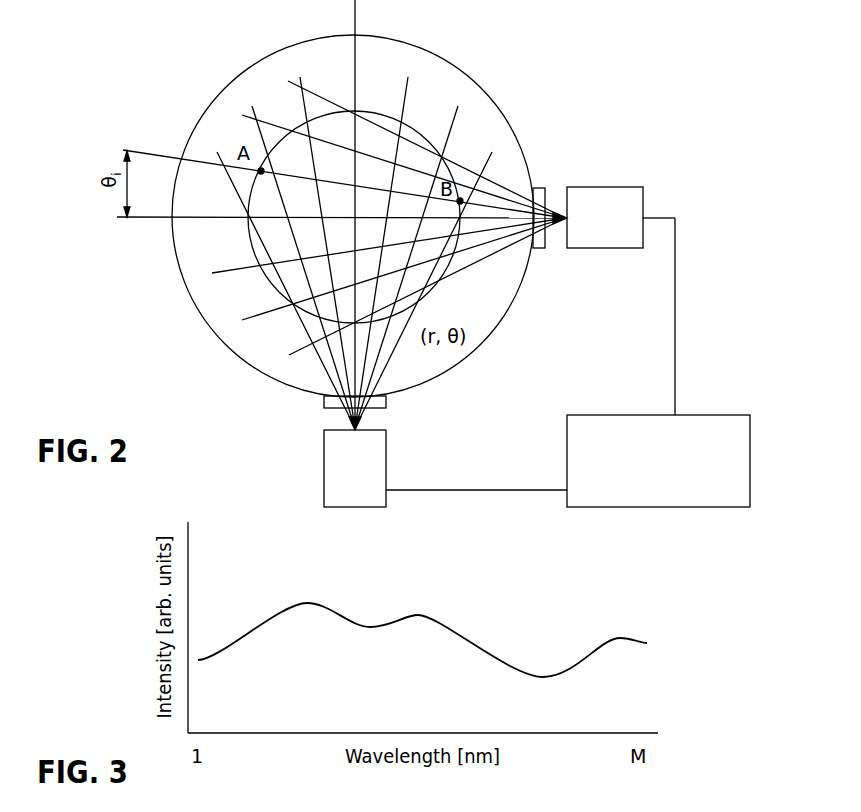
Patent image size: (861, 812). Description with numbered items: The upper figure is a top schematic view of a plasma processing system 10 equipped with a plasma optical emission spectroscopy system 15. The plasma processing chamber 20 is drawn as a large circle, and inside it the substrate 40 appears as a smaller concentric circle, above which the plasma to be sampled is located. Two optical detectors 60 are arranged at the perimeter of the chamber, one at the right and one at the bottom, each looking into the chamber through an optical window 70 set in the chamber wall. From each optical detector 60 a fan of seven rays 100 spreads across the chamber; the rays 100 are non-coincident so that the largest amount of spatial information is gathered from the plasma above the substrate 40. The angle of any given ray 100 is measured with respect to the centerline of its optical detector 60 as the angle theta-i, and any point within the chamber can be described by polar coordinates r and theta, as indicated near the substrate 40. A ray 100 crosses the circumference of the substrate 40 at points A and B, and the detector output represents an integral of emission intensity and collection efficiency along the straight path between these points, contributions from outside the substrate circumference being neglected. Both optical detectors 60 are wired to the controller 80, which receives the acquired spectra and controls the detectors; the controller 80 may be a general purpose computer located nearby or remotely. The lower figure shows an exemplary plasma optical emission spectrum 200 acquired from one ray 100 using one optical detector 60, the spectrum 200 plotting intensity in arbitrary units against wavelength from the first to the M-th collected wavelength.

In FIG. 2, the plasma processing system 10 is at (158, 70).
In FIG. 2, the plasma optical emission spectroscopy (OES) system 15 is at (685, 156).
In FIG. 2, the plasma processing chamber 20 is at (487, 92).
In FIG. 2, the substrate 40 is at (433, 290).
In FIG. 2, the optical detector 60 is at (602, 250).
In FIG. 2, the optical window 70 is at (542, 252).
In FIG. 2, the controller 80 is at (670, 470).
In FIG. 2, the ray 100 is at (197, 162).
In FIG. 3, the intensity spectrum curve 200 is at (450, 623).